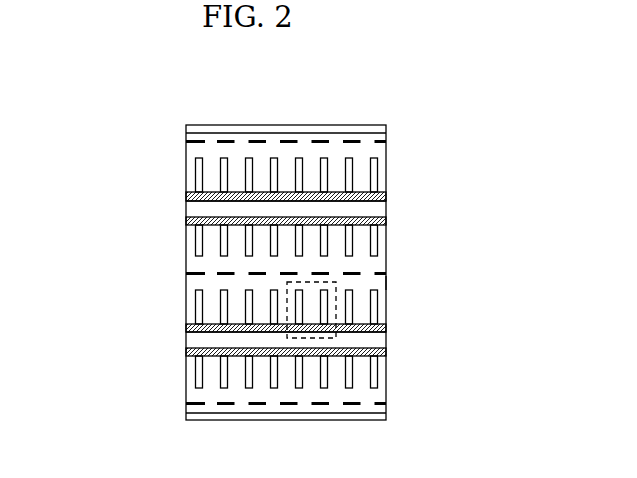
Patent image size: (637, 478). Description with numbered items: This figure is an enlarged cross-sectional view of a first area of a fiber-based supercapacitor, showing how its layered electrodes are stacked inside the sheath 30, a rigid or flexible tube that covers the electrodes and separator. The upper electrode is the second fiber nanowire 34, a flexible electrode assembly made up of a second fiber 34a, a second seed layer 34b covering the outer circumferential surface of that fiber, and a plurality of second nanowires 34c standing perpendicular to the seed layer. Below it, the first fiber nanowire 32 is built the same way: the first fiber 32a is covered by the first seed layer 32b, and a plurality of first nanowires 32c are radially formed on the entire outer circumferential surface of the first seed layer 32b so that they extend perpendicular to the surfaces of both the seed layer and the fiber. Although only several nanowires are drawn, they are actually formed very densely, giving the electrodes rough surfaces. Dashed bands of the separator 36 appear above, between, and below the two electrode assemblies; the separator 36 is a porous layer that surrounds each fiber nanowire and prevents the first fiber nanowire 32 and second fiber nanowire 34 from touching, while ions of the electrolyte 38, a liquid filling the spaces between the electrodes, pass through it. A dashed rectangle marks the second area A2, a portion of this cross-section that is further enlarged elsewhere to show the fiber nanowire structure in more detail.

The sheath 30 is at (345, 125).
The first fiber nanowire 32 is at (226, 326).
The first fiber 32a is at (249, 360).
The first seed layer 32b is at (188, 325).
The first nanowires 32c is at (195, 298).
The second fiber nanowire 34 is at (226, 194).
The second fiber 34a is at (249, 228).
The second seed layer 34b is at (188, 194).
The second nanowires 34c is at (195, 167).
The separator 36 is at (227, 140).
The electrolyte 38 is at (377, 282).
The second area A2 is at (336, 338).